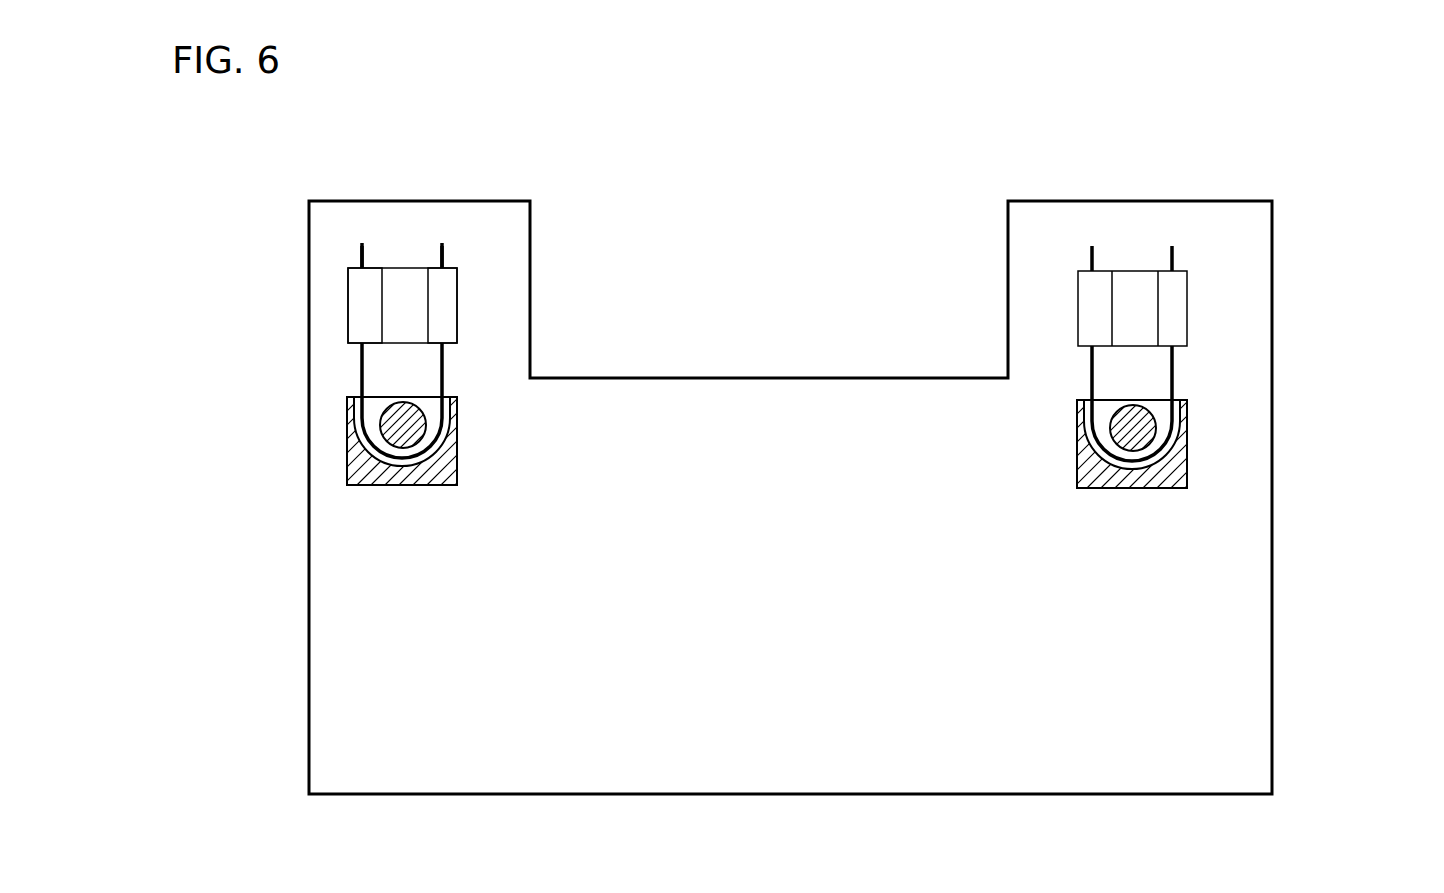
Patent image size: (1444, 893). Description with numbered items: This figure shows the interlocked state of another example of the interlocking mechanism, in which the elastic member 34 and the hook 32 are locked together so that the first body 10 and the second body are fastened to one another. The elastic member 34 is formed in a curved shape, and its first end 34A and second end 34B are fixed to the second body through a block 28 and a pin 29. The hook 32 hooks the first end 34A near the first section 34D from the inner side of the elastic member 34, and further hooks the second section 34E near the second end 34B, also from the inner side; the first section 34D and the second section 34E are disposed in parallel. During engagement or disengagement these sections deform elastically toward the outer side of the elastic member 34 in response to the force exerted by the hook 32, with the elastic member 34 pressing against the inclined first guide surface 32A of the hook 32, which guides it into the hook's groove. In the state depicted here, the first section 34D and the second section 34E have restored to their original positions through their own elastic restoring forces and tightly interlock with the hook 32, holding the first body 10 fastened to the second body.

The first body 10 is at (1272, 542).
The block 28 is at (457, 467).
The pin 29 is at (390, 412).
The hook 32 is at (336, 290).
The first guide surface 32A is at (357, 313).
The elastic member 34 is at (352, 357).
The first end 34A is at (362, 244).
The second end 34B is at (447, 246).
The first section 34D is at (361, 249).
The second section 34E is at (447, 250).